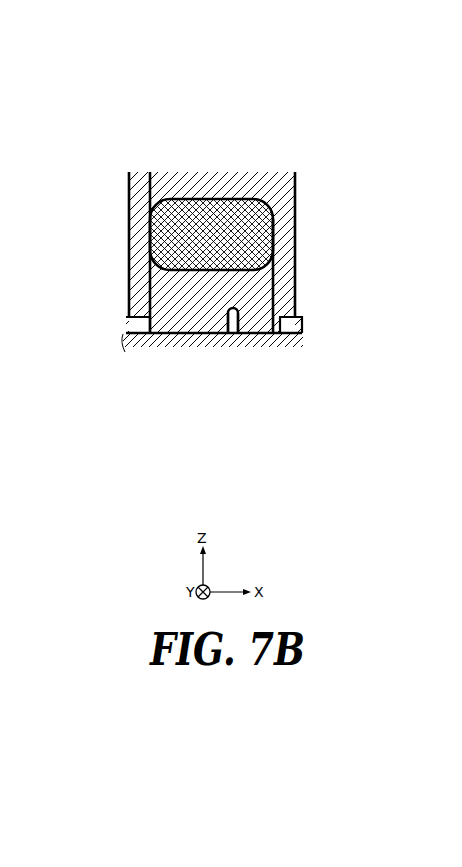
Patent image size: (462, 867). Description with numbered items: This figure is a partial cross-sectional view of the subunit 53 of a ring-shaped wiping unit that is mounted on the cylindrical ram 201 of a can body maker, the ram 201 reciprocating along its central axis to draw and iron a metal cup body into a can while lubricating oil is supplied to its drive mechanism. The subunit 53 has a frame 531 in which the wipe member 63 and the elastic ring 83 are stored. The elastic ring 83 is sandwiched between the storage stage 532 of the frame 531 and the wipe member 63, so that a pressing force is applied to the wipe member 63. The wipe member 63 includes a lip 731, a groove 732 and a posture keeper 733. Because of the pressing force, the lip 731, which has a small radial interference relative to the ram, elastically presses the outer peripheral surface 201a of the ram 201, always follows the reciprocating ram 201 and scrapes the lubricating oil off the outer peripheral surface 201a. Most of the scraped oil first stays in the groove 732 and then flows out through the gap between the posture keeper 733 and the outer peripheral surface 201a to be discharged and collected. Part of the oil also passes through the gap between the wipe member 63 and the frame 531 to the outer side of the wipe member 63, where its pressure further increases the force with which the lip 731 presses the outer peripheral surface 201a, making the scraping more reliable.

The subunit 53 is at (241, 203).
The frame 531 is at (153, 171).
The storage stage 532 is at (251, 180).
The wipe member 63 is at (285, 278).
The elastic ring 83 is at (278, 229).
The outer peripheral surface 201a is at (292, 313).
The ram 201 is at (310, 340).
The lip 731 is at (218, 367).
The groove 732 is at (228, 335).
The posture keeper 733 is at (250, 334).